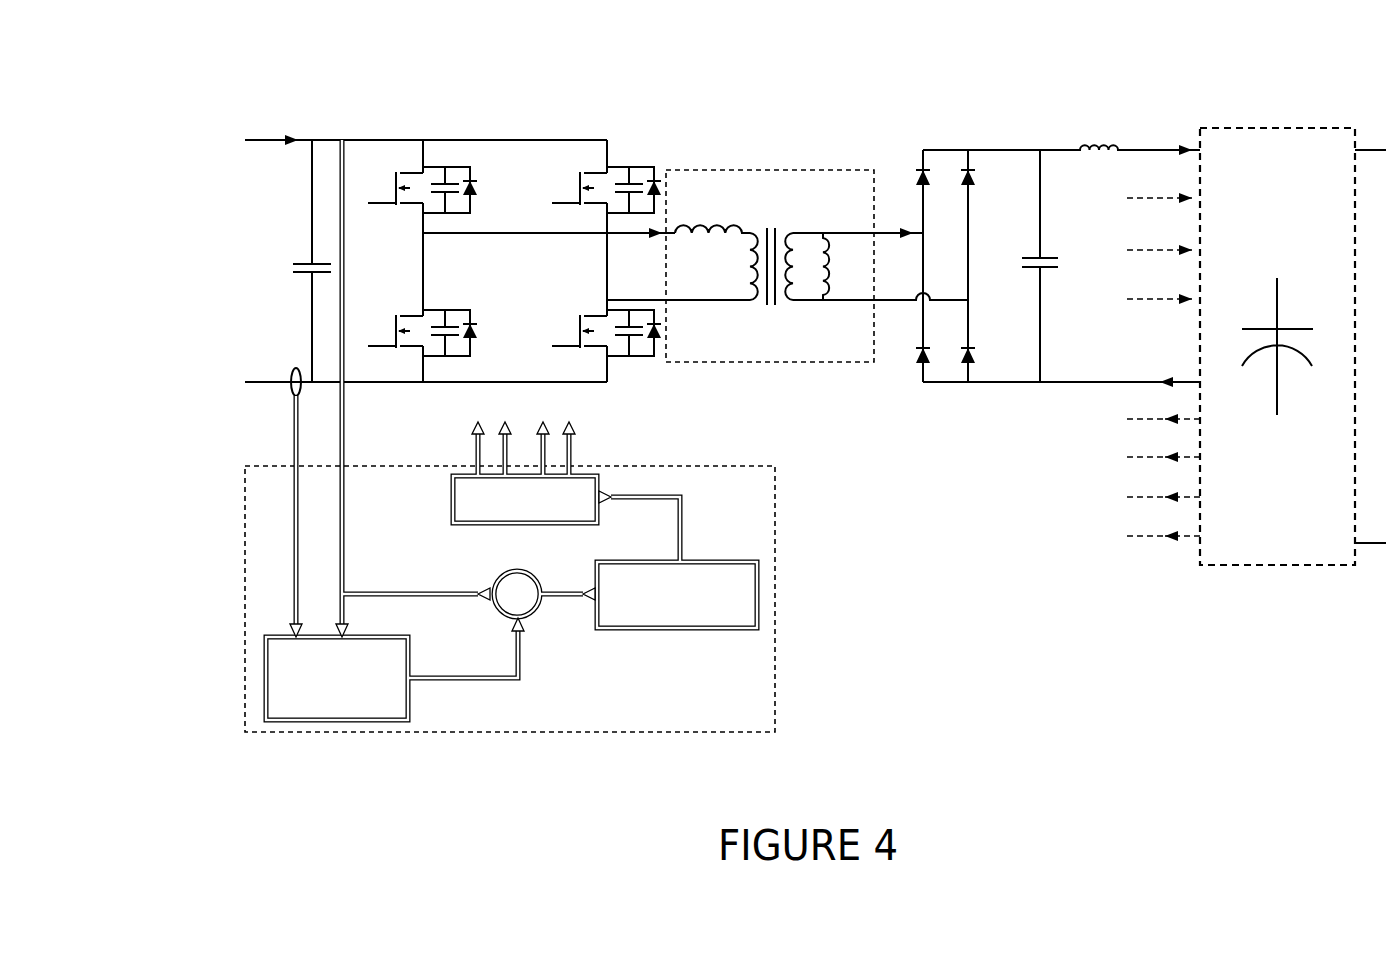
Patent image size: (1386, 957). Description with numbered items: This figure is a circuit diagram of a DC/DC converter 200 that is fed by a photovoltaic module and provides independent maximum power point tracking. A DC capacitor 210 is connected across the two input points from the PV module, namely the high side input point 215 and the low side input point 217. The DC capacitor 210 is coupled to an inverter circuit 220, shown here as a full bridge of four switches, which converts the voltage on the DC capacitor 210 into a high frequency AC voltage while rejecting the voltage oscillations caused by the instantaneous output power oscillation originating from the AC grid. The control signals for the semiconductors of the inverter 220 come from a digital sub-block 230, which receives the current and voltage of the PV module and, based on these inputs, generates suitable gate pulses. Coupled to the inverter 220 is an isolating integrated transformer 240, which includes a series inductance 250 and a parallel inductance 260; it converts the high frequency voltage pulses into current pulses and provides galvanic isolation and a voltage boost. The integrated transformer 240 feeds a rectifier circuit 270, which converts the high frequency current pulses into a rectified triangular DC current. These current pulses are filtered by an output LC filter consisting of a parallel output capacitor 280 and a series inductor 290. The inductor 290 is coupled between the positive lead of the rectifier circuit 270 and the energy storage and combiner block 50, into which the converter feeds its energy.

The DC/DC converter 200 is at (210, 113).
The high side input point 215 is at (324, 135).
The DC capacitor 210 is at (296, 281).
The low side input point 217 is at (271, 389).
The inverter circuit 220 is at (550, 126).
The integrated transformer 240 is at (752, 156).
The series inductance 250 is at (689, 218).
The parallel inductance 260 is at (831, 236).
The rectifier circuit 270 is at (943, 147).
The parallel output capacitor 280 is at (1032, 284).
The inductor 290 is at (1079, 135).
The energy storage and combiner block 50 is at (1180, 585).
The digital sub-block 230 is at (792, 655).